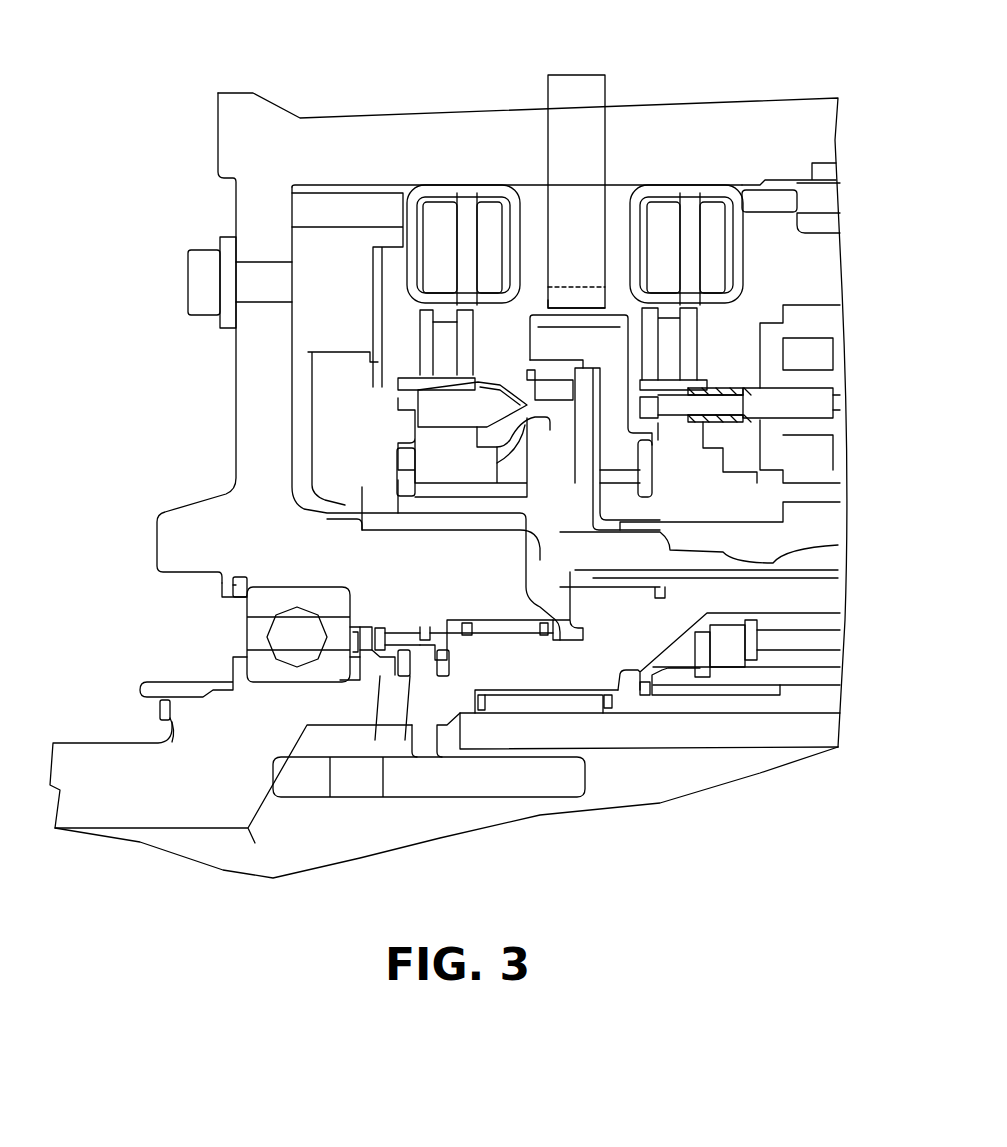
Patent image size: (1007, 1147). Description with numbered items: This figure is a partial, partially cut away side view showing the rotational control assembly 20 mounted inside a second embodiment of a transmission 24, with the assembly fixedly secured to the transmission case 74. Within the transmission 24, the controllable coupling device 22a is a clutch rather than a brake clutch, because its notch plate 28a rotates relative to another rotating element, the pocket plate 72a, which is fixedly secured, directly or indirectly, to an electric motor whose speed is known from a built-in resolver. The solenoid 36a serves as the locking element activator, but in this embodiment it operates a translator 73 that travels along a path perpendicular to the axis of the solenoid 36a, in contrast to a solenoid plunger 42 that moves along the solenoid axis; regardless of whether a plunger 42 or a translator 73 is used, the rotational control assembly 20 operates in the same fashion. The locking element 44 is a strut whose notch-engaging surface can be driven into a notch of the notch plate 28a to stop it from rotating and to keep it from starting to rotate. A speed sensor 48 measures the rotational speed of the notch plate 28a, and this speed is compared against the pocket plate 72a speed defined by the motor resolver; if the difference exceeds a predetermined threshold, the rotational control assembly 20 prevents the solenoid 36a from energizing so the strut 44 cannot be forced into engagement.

The rotatable control assembly 20 is at (585, 73).
The controllable coupling device 22a is at (546, 306).
The transmission 24 is at (228, 210).
The notch plate 28a is at (532, 327).
The solenoid 36a is at (432, 192).
The solenoid plunger 42 is at (418, 400).
The locking element 44 is at (547, 403).
The speed sensor 48 is at (585, 286).
The pocket plate 72a is at (497, 463).
The translator 73 is at (418, 335).
The transmission case 74 is at (360, 113).